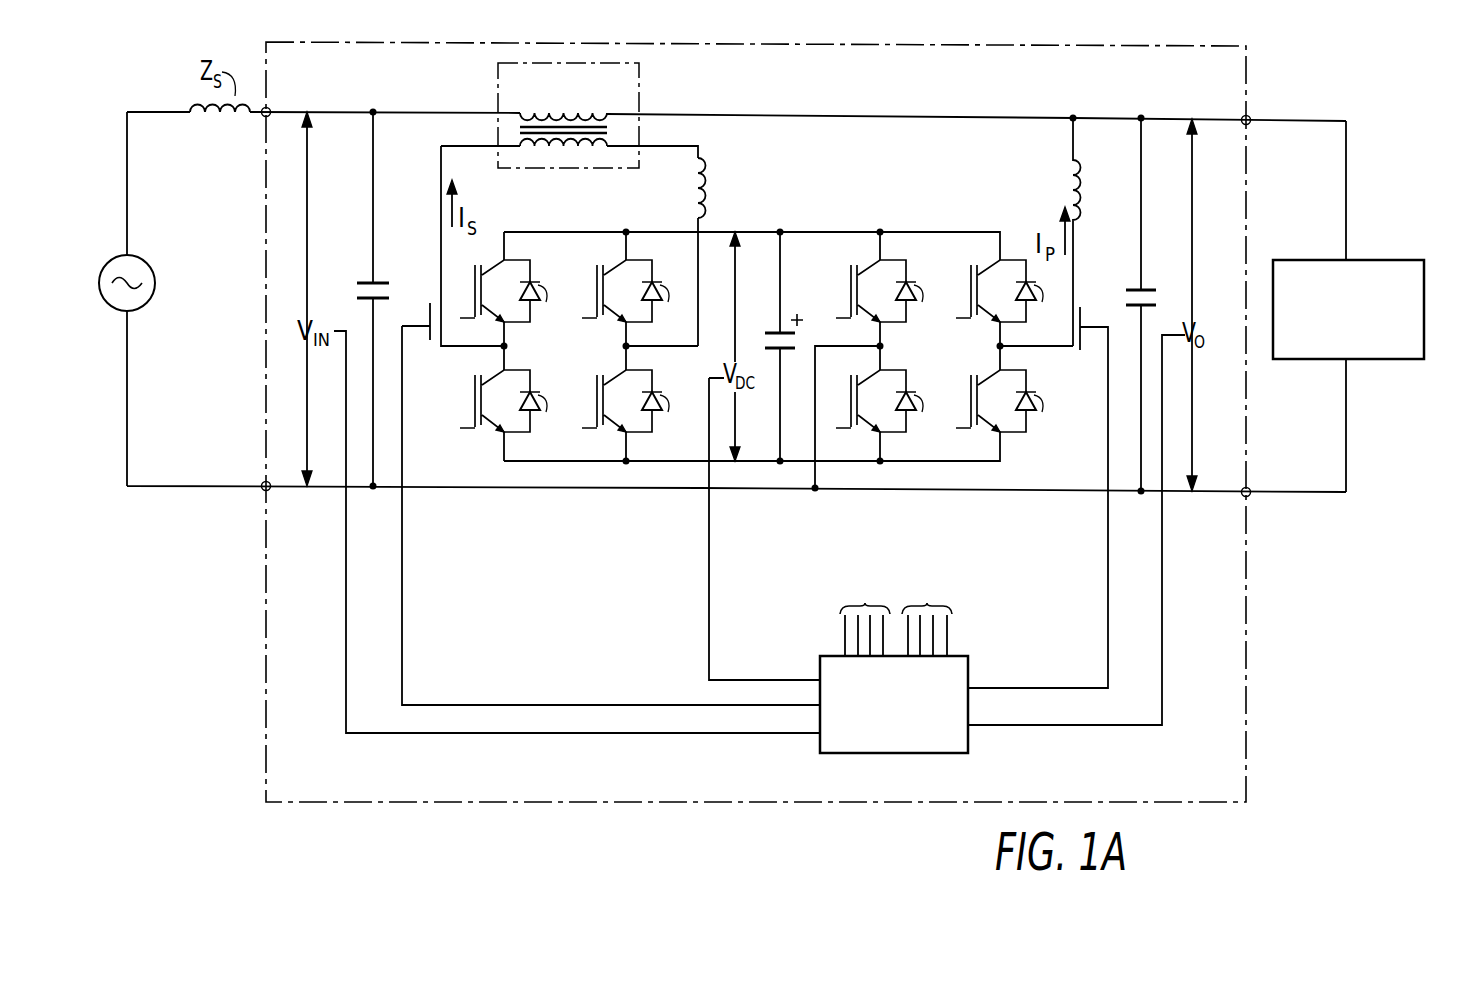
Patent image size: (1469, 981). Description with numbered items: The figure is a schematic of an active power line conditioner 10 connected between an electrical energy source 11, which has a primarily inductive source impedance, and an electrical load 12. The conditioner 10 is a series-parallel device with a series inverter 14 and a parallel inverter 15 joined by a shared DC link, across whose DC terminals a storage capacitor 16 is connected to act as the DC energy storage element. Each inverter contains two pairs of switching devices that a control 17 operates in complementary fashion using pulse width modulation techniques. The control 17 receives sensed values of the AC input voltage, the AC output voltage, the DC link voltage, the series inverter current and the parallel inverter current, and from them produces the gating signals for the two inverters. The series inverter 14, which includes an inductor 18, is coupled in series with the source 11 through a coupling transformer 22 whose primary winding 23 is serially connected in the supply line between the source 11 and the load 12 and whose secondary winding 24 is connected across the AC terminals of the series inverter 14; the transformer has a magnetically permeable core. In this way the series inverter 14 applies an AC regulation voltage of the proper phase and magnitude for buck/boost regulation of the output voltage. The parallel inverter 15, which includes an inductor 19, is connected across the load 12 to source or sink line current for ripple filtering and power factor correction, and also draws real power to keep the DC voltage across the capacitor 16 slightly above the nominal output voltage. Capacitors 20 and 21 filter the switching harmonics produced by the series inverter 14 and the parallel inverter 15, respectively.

The active power line conditioner 10 is at (337, 42).
The electrical energy source 11 is at (155, 284).
The electrical load 12 is at (1401, 259).
The series inverter 14 is at (577, 365).
The parallel inverter 15 is at (953, 368).
The storage capacitor 16 is at (765, 334).
The control 17 is at (968, 750).
The inductor 18 is at (713, 186).
The inductor 19 is at (1073, 172).
The capacitor 20 is at (358, 290).
The capacitor 21 is at (1157, 297).
The coupling transformer 22 is at (640, 82).
The primary winding 23 is at (531, 119).
The secondary winding 24 is at (556, 147).